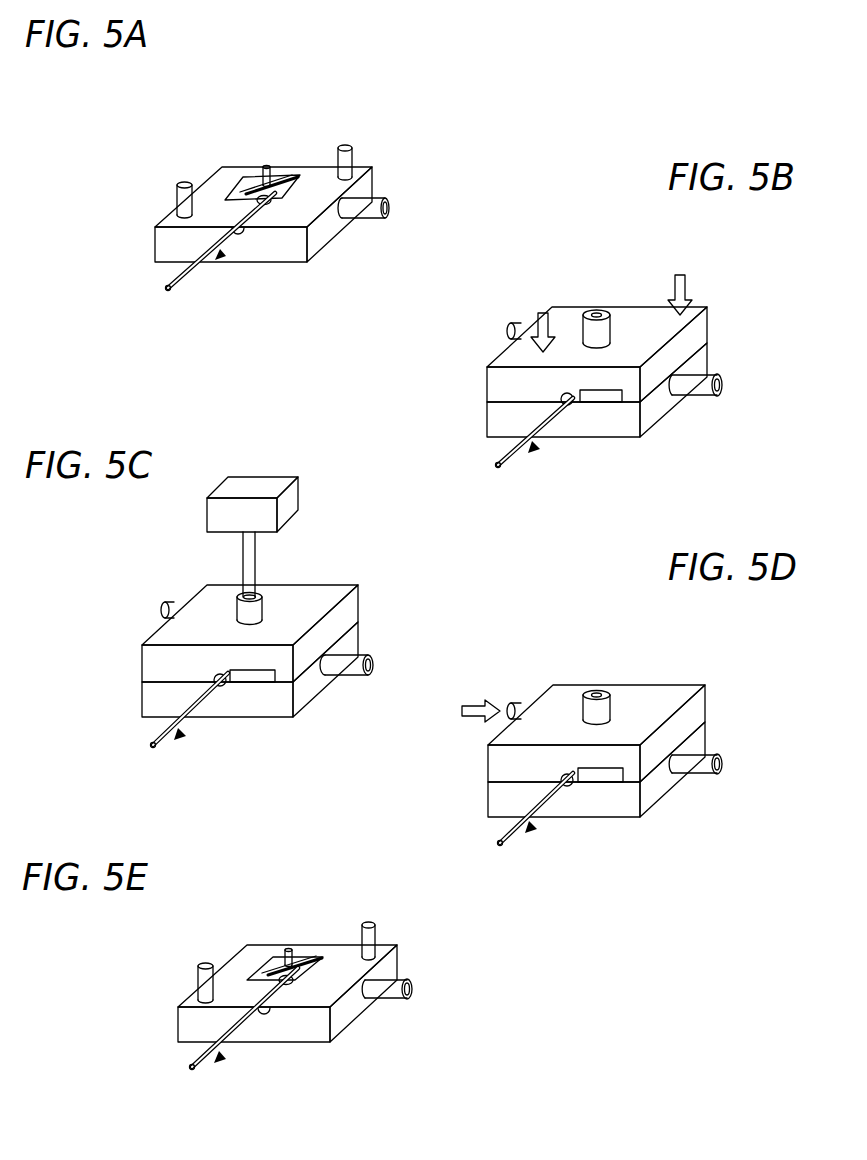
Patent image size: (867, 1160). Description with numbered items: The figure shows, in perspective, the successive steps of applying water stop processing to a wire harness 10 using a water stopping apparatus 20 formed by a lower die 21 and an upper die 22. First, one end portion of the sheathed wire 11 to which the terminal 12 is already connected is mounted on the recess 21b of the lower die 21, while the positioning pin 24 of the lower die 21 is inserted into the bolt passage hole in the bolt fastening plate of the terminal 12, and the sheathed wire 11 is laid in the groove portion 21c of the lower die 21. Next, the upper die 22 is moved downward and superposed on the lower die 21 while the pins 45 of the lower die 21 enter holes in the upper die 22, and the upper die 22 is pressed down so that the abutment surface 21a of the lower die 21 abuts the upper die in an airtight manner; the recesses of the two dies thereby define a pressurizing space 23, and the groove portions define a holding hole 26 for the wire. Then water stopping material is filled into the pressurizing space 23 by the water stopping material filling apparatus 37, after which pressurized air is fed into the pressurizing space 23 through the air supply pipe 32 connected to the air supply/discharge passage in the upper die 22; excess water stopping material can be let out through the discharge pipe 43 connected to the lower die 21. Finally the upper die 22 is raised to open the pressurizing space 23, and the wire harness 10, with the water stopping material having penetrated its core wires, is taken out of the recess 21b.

In FIG. 5A, the wire harness 10 is at (220, 255).
In FIG. 5B, the wire harness 10 is at (535, 448).
In FIG. 5C, the wire harness 10 is at (181, 735).
In FIG. 5D, the wire harness 10 is at (532, 828).
In FIG. 5E, the wire harness 10 is at (220, 1058).
In FIG. 5A, the sheathed wire 11 is at (180, 270).
In FIG. 5B, the sheathed wire 11 is at (537, 423).
In FIG. 5C, the sheathed wire 11 is at (160, 735).
In FIG. 5D, the sheathed wire 11 is at (498, 837).
In FIG. 5E, the sheathed wire 11 is at (190, 1057).
In FIG. 5A, the terminal 12 is at (278, 173).
In FIG. 5E, the terminal 12 is at (300, 955).
In FIG. 5B, the water stopping apparatus 20 is at (627, 364).
In FIG. 5C, the water stopping apparatus 20 is at (282, 657).
In FIG. 5D, the water stopping apparatus 20 is at (608, 743).
In FIG. 5A, the lower die 21 is at (317, 252).
In FIG. 5B, the lower die 21 is at (667, 417).
In FIG. 5C, the lower die 21 is at (310, 703).
In FIG. 5D, the lower die 21 is at (663, 790).
In FIG. 5E, the lower die 21 is at (348, 1018).
In FIG. 5A, the abutment surface 21a is at (330, 192).
In FIG. 5E, the abutment surface 21a is at (350, 972).
In FIG. 5A, the recess 21b is at (237, 168).
In FIG. 5E, the recess 21b is at (258, 957).
In FIG. 5A, the groove portion 21c is at (240, 238).
In FIG. 5E, the groove portion 21c is at (267, 1038).
In FIG. 5B, the upper die 22 is at (702, 323).
In FIG. 5C, the upper die 22 is at (312, 590).
In FIG. 5D, the upper die 22 is at (640, 698).
In FIG. 5D, the pressurizing space 23 is at (523, 700).
In FIG. 5A, the positioning pin 24 is at (263, 165).
In FIG. 5E, the positioning pin 24 is at (288, 948).
In FIG. 5B, the holding hole 26 is at (568, 413).
In FIG. 5C, the holding hole 26 is at (225, 688).
In FIG. 5D, the holding hole 26 is at (570, 792).
In FIG. 5B, the air supply pipe 32 is at (535, 322).
In FIG. 5C, the air supply pipe 32 is at (166, 602).
In FIG. 5C, the water stopping material filling apparatus 37 is at (298, 490).
In FIG. 5A, the discharge pipe 43 is at (365, 213).
In FIG. 5B, the discharge pipe 43 is at (700, 393).
In FIG. 5C, the discharge pipe 43 is at (348, 672).
In FIG. 5D, the discharge pipe 43 is at (705, 770).
In FIG. 5E, the discharge pipe 43 is at (387, 995).
In FIG. 5A, the pins 45 is at (353, 158).
In FIG. 5E, the pins 45 is at (375, 938).